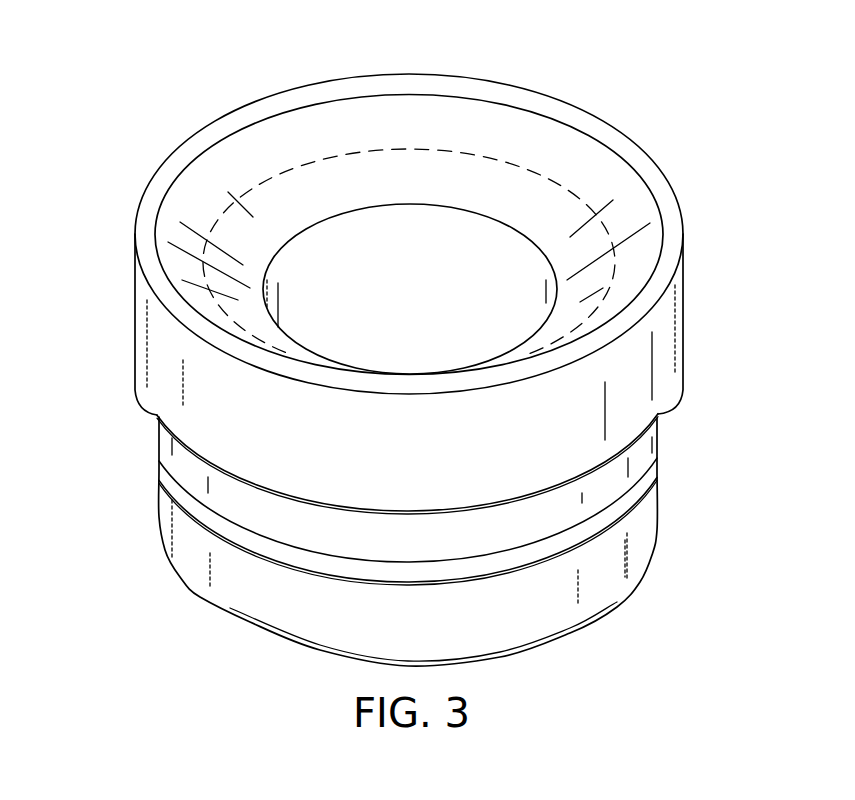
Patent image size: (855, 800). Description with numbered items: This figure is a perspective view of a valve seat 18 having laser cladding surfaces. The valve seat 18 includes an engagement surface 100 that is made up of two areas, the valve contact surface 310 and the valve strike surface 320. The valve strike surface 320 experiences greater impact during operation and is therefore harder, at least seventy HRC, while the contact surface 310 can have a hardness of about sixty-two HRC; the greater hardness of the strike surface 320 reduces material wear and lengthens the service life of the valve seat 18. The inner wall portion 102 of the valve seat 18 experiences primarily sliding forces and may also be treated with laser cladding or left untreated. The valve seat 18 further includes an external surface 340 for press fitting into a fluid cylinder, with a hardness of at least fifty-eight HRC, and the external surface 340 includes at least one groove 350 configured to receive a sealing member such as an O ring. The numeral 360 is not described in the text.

The valve seat 18 is at (156, 108).
The engagement surface 100 is at (281, 128).
The inner wall portion 102 is at (372, 224).
The valve contact surface 310 is at (604, 175).
The valve strike surface 320 is at (515, 190).
The external surface 340 is at (158, 492).
The groove 350 is at (410, 577).
The outer side wall 360 is at (135, 302).